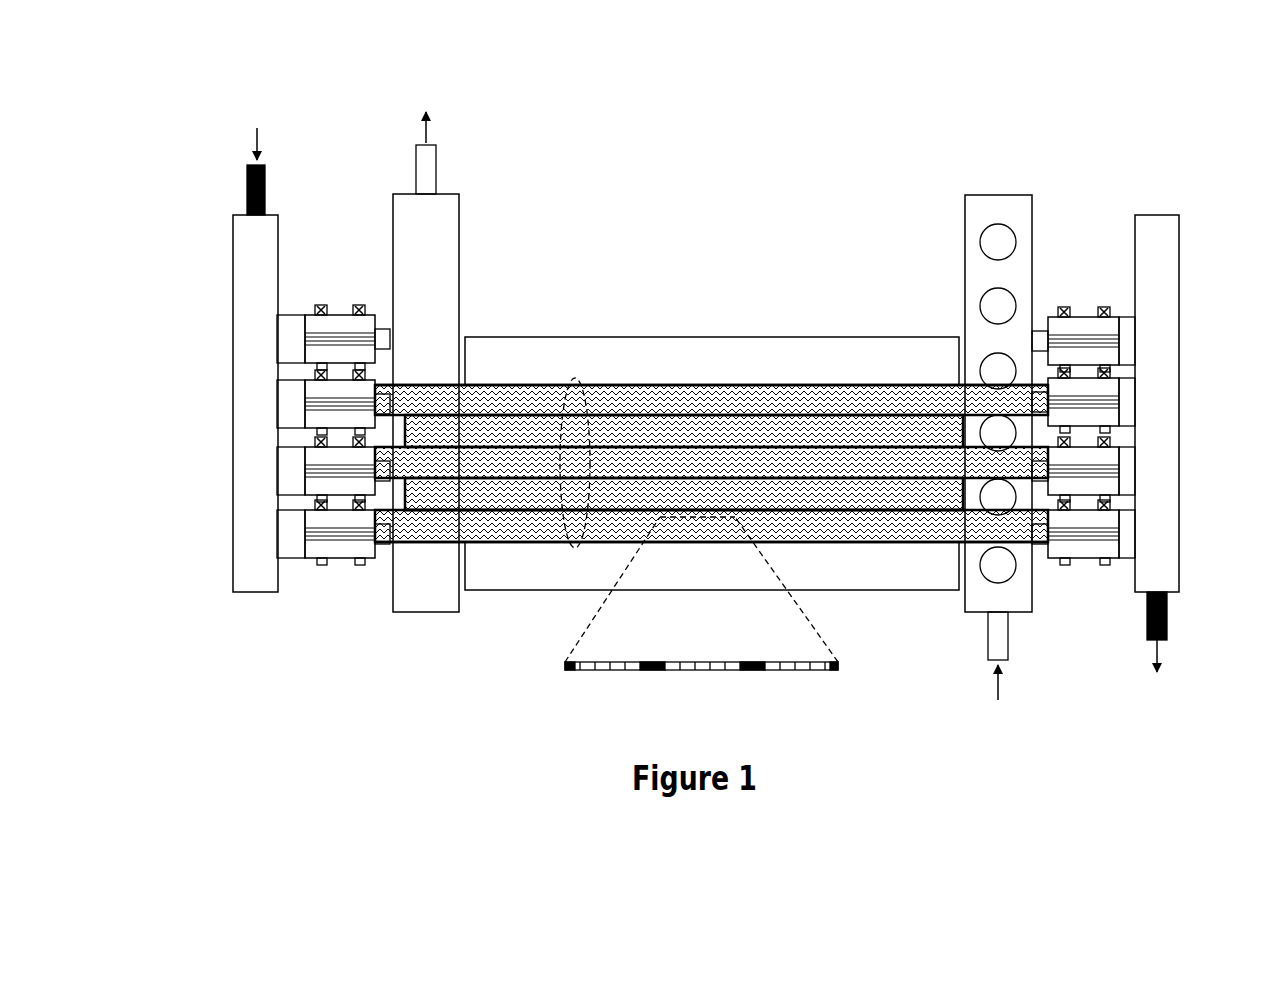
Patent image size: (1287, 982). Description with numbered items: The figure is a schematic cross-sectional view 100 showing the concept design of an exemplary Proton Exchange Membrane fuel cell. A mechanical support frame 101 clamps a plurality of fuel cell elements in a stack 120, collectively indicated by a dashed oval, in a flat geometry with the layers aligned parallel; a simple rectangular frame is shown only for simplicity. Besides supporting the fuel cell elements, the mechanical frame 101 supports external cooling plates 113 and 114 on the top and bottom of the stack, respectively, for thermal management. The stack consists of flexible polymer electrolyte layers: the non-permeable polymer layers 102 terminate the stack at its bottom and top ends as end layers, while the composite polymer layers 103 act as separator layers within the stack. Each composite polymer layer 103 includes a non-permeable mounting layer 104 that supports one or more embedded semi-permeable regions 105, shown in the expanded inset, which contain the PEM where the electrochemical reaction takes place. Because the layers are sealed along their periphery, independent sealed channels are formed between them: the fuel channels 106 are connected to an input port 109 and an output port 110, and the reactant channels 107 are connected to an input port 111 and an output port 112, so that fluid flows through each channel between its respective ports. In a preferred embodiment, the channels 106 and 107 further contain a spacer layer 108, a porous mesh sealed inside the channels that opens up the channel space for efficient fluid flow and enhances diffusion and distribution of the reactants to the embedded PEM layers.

The schematic cross-sectional view 100 is at (720, 100).
The mechanical support frame 101 is at (385, 277).
The polymer layers 102 is at (708, 384).
The composite polymer layer 103 is at (750, 515).
The mounting layer 104 is at (566, 664).
The semi-permeable regions 105 is at (584, 671).
The fuel channels 106 is at (950, 431).
The reactant channels 107 is at (418, 400).
The spacer layer 108 is at (850, 514).
The input port 109 is at (245, 175).
The output port 110 is at (1168, 604).
The input port 111 is at (1012, 637).
The output port 112 is at (440, 160).
The external cooling plate 113 is at (822, 347).
The external cooling plate 114 is at (594, 592).
The stack 120 is at (578, 380).